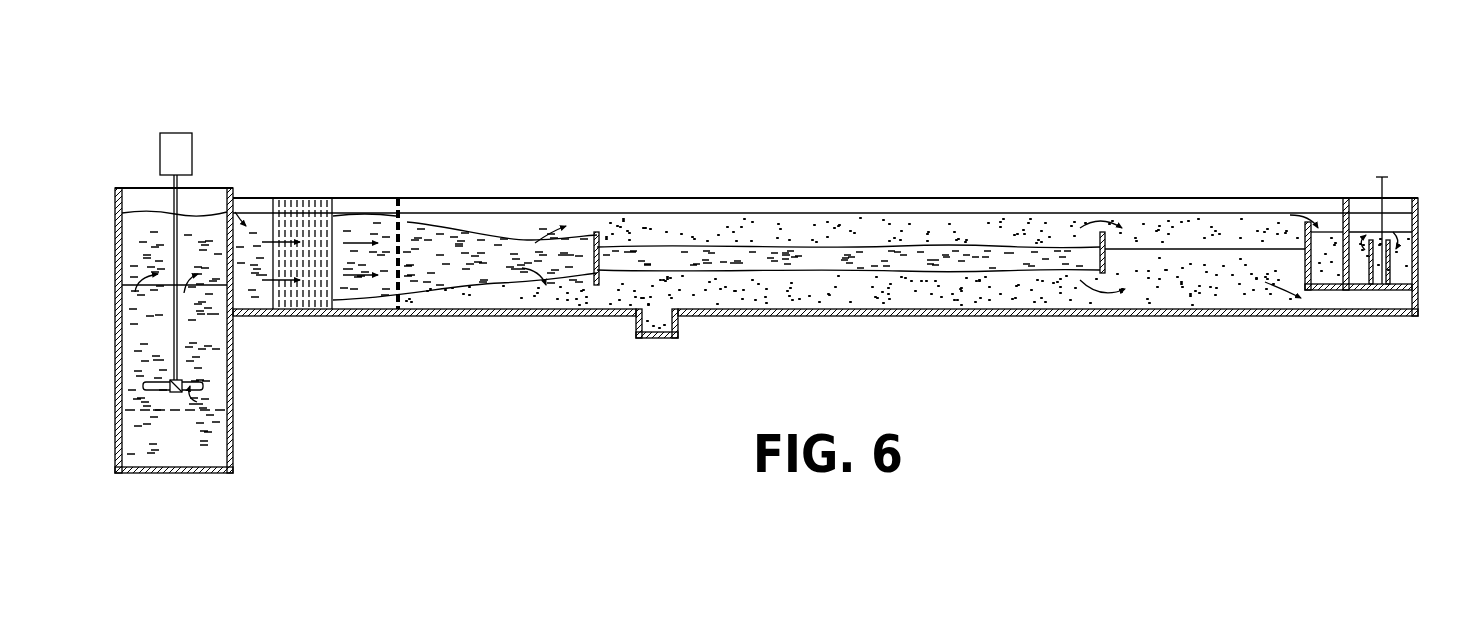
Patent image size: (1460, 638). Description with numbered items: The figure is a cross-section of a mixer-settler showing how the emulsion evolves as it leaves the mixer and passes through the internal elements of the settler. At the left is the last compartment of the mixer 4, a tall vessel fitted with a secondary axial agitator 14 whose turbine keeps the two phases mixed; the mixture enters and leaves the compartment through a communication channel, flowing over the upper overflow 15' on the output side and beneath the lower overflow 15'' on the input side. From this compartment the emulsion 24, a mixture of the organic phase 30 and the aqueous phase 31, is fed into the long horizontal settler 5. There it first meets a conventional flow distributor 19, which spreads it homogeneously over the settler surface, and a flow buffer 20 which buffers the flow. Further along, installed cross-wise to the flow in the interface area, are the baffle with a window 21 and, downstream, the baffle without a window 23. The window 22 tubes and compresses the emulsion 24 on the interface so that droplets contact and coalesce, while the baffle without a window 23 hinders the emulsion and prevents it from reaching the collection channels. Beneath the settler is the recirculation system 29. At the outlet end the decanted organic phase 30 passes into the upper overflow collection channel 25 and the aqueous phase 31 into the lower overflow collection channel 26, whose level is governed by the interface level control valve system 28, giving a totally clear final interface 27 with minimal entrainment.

The mixer 4 is at (213, 186).
The settler 5 is at (493, 195).
The secondary axial agitator 14 is at (173, 132).
The communication channel upper overflow 15' is at (160, 279).
The communication channel lower overflow 15'' is at (226, 418).
The flow distributor 19 is at (298, 198).
The flow buffer 20 is at (398, 198).
The baffle with window 21 is at (597, 231).
The window 22 is at (600, 258).
The baffle without window 23 is at (1097, 226).
The emulsion 24 is at (458, 258).
The upper overflow collection channel for the decanted organic phase 25 is at (1324, 226).
The lower overflow collection channel for the decanted aqueous phase 26 is at (1391, 240).
The final interface 27 is at (1193, 252).
The interface level control valve system 28 is at (1378, 176).
The recirculation system 29 is at (660, 326).
The organic phase 30 is at (805, 230).
The aqueous phase 31 is at (812, 290).